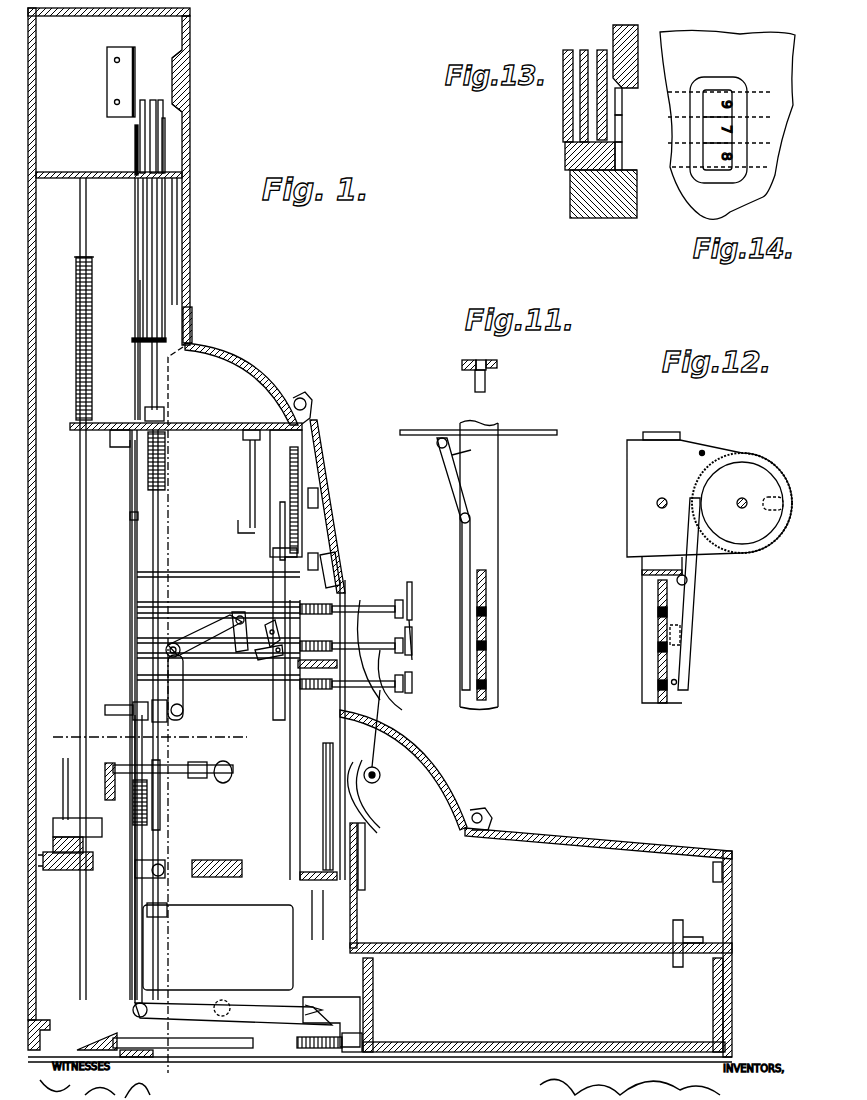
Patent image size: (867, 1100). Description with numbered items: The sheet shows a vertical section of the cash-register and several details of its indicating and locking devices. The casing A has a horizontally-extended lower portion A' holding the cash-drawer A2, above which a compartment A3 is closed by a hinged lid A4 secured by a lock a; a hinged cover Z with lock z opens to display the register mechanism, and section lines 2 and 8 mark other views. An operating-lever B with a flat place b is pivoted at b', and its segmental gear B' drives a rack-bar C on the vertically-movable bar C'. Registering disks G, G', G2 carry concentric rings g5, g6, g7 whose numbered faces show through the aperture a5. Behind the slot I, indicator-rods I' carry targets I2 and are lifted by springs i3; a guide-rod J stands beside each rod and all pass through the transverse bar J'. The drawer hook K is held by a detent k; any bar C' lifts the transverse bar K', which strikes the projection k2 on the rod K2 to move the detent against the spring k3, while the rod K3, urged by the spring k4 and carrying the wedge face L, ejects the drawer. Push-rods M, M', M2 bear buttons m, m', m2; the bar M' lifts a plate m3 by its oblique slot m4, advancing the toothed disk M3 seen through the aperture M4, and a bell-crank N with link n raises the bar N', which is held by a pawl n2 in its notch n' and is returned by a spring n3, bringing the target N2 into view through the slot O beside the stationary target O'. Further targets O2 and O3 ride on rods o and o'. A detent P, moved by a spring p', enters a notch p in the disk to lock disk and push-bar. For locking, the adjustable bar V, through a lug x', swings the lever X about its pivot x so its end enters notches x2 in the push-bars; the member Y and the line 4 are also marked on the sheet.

In FIG. 1, the casing A is at (380, 535).
In FIG. 1, the horizontally-extended lower portion A' is at (742, 954).
In FIG. 1, the cash-drawer A2 is at (544, 1005).
In FIG. 1, the compartment A3 is at (541, 895).
In FIG. 1, the hinged lid A4 is at (598, 832).
In FIG. 1, the lock a is at (713, 870).
In FIG. 13, the slot or aperture a5 is at (630, 170).
In FIG. 1, the operating-lever B is at (416, 765).
In FIG. 1, the segmental gear B' is at (361, 784).
In FIG. 1, the flat place b is at (397, 616).
In FIG. 1, the pivot b' is at (392, 745).
In FIG. 1, the rack-bar C is at (350, 841).
In FIG. 1, the vertically-movable bar C' is at (214, 900).
In FIG. 13, the registering wheel or disk G is at (575, 121).
In FIG. 13, the intermediate registering wheel or disk G' is at (551, 96).
In FIG. 13, the registering wheel or disk G2 is at (598, 63).
In FIG. 13, the annular flange or ring g5 is at (615, 100).
In FIG. 13, the annular flange or ring g6 is at (615, 128).
In FIG. 13, the annular flange or ring g7 is at (615, 155).
In FIG. 1, the transverse slot or opening I is at (240, 366).
In FIG. 1, the indicator-rod I' is at (69, 589).
In FIG. 1, the target I2 is at (173, 267).
In FIG. 1, the spring i3 is at (80, 363).
In FIG. 1, the guide-rod J is at (72, 805).
In FIG. 1, the transverse bar J' is at (65, 870).
In FIG. 1, the catch or hook K is at (331, 1008).
In FIG. 1, the transverse bar K' is at (79, 778).
In FIG. 1, the upwardly-extending rod K2 is at (143, 942).
In FIG. 1, the rod K3 is at (232, 1021).
In FIG. 1, the detent k is at (318, 1012).
In FIG. 1, the projection k2 is at (117, 705).
In FIG. 1, the spring k3 is at (143, 815).
In FIG. 1, the spring k4 is at (322, 1056).
In FIG. 1, the inclined or wedge-shaped face L is at (90, 1040).
In FIG. 1, the push-rod M is at (321, 714).
In FIG. 11, the push-rod M is at (505, 607).
In FIG. 12, the push-rod M is at (636, 641).
In FIG. 1, the push-bar M' is at (366, 650).
In FIG. 11, the push-bar M' is at (507, 643).
In FIG. 12, the push-bar M' is at (636, 643).
In FIG. 1, the push-rod M2 is at (400, 705).
In FIG. 11, the push-rod M2 is at (488, 685).
In FIG. 12, the push-rod M2 is at (658, 685).
In FIG. 1, the indicating wheel or disk M3 is at (292, 470).
In FIG. 12, the indicating wheel or disk M3 is at (762, 478).
In FIG. 12, the aperture M4 is at (785, 505).
In FIG. 1, the push-button m is at (387, 602).
In FIG. 1, the push-button m' is at (390, 638).
In FIG. 1, the push-button m2 is at (410, 683).
In FIG. 1, the plate m3 is at (268, 635).
In FIG. 1, the diagonal or oblique slot m4 is at (262, 655).
In FIG. 1, the bell-crank lever N is at (207, 599).
In FIG. 1, the vertically-movable bar N' is at (169, 715).
In FIG. 1, the target N2 is at (150, 100).
In FIG. 1, the link n is at (185, 687).
In FIG. 1, the retaining-notch n' is at (170, 795).
In FIG. 1, the spring-controlled pawl n2 is at (177, 768).
In FIG. 1, the spring n3 is at (316, 646).
In FIG. 1, the aperture or slot O is at (194, 81).
In FIG. 1, the stationary plate or target O' is at (135, 77).
In FIG. 1, the target O2 is at (165, 145).
In FIG. 1, the target O3 is at (148, 143).
In FIG. 1, the vertically-movable rod o is at (176, 299).
In FIG. 1, the vertically-movable rod o' is at (131, 350).
In FIG. 1, the dog or detent P is at (280, 535).
In FIG. 12, the dog or detent P is at (680, 545).
In FIG. 12, the notch p is at (699, 591).
In FIG. 12, the spring p' is at (691, 655).
In FIG. 1, the longitudinally-adjustable bar V is at (110, 433).
In FIG. 1, the locking-lever X is at (132, 495).
In FIG. 11, the locking-lever X is at (465, 372).
In FIG. 1, the pivot x is at (121, 521).
In FIG. 11, the pivot x is at (447, 528).
In FIG. 11, the depending lug x' is at (432, 454).
In FIG. 11, the notch x2 is at (486, 603).
In FIG. 11, the plate Y is at (478, 562).
In FIG. 1, the hinged lid or cover Z is at (323, 472).
In FIG. 1, the lock z is at (337, 550).
In FIG. 1, the section line 2 is at (183, 1062).
In FIG. 1, the section line 4 is at (198, 345).
In FIG. 1, the section line 8 is at (149, 738).